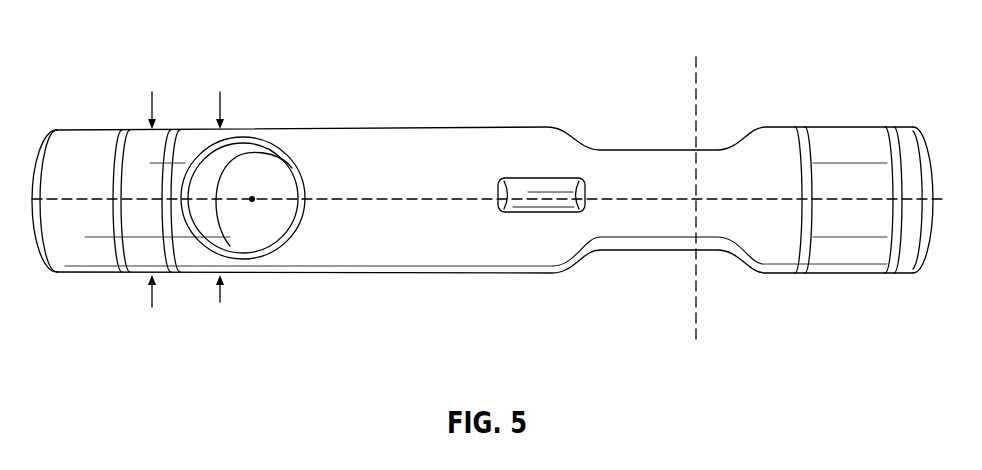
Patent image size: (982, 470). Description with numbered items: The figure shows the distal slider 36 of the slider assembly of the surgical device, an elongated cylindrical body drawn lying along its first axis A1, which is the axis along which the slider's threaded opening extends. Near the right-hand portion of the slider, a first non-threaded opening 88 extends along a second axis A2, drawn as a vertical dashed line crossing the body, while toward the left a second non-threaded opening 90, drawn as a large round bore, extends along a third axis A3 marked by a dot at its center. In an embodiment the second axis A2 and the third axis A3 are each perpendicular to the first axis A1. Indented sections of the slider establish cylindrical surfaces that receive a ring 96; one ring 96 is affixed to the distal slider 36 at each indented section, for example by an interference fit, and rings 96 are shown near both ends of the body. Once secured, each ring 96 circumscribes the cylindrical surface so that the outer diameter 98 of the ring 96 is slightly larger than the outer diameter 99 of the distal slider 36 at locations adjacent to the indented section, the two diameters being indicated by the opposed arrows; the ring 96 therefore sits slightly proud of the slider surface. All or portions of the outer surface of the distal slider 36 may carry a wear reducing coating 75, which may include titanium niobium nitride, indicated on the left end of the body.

The distal slider 36 is at (792, 91).
The wear reducing coating 75 is at (72, 150).
The first non-threaded opening 88 is at (658, 150).
The second non-threaded opening 90 is at (270, 233).
The ring 96 is at (170, 124).
The outer diameter of the ring 98 is at (152, 307).
The outer diameter of the distal slider 99 is at (220, 302).
The first axis A1 is at (42, 205).
The second axis A2 is at (696, 293).
The third axis A3 is at (252, 196).